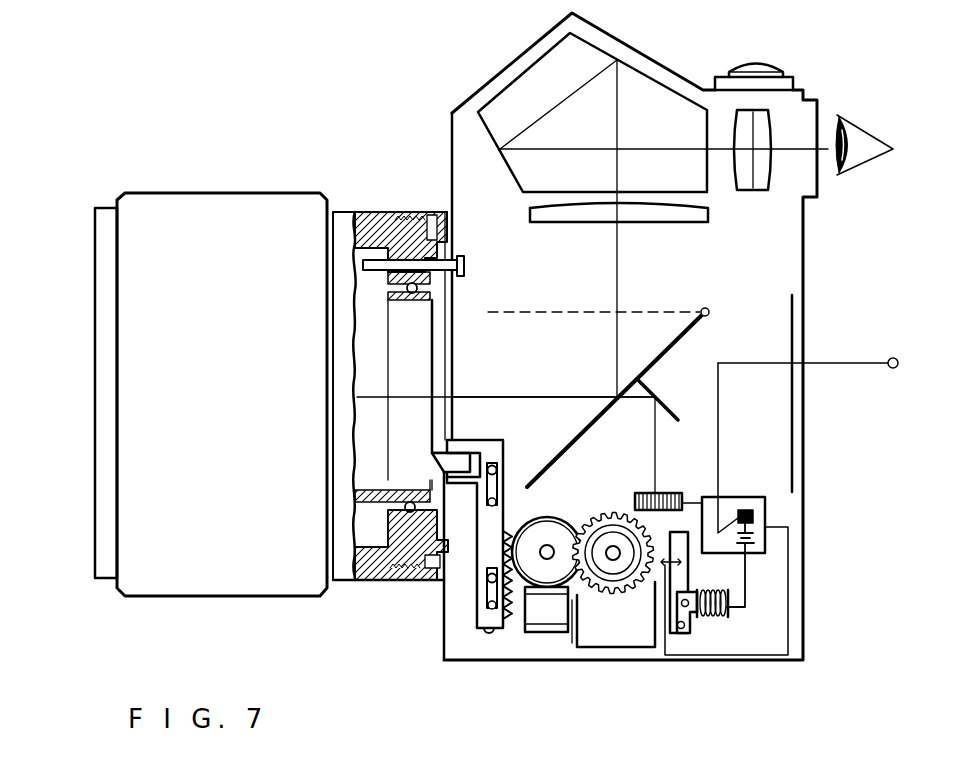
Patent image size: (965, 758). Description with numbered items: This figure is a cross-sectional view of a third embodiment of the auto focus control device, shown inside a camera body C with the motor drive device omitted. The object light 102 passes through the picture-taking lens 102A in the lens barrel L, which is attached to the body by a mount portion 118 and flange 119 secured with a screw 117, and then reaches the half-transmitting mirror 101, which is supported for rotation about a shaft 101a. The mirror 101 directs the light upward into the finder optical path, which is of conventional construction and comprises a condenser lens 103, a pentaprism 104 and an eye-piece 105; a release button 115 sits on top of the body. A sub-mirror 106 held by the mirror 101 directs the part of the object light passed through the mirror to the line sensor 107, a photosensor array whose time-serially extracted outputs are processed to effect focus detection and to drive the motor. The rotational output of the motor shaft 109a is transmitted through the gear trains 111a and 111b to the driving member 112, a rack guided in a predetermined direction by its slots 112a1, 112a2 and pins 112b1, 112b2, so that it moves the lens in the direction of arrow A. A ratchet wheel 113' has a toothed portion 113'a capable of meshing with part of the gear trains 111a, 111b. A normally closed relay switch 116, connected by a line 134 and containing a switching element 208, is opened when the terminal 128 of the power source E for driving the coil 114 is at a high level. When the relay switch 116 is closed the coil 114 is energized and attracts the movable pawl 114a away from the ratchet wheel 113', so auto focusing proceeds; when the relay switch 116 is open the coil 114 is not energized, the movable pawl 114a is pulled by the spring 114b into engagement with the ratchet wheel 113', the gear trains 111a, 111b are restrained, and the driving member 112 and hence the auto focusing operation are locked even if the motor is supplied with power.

The picture-taking lens 102A is at (232, 205).
The lens mount member 118 is at (366, 262).
The camera body / mount flange 119 is at (412, 212).
The fixing screw 117 is at (466, 266).
The pentaprism 104 is at (523, 165).
The condenser lens 103 is at (677, 222).
The eye-piece 105 is at (745, 190).
The release button 115 is at (753, 62).
The camera body C is at (630, 48).
The half-transmitting mirror 101 is at (648, 366).
The shaft 101a is at (708, 317).
The connection line 134 is at (790, 330).
The terminal 128 is at (898, 362).
The object light 102 is at (518, 397).
The sub-mirror 106 is at (661, 404).
The line sensor 107 is at (667, 490).
The relay switch 116 is at (752, 510).
The switch element 208 is at (745, 497).
The driving member 112 is at (483, 625).
The pin 112b2 is at (500, 472).
The slot 112a2 is at (503, 502).
The pin 112b1 is at (488, 580).
The slot 112a1 is at (490, 608).
The gear train 111b is at (548, 520).
The gear train 111a is at (538, 620).
The motor shaft 109a is at (587, 648).
The ratchet wheel 113' is at (612, 626).
The toothed portion 113'a is at (646, 653).
The movable pawl 114a is at (684, 577).
The coil 114 is at (707, 618).
The spring 114b is at (675, 633).
The power source E is at (766, 548).
The lens barrel L is at (331, 584).
The direction arrow A is at (472, 500).